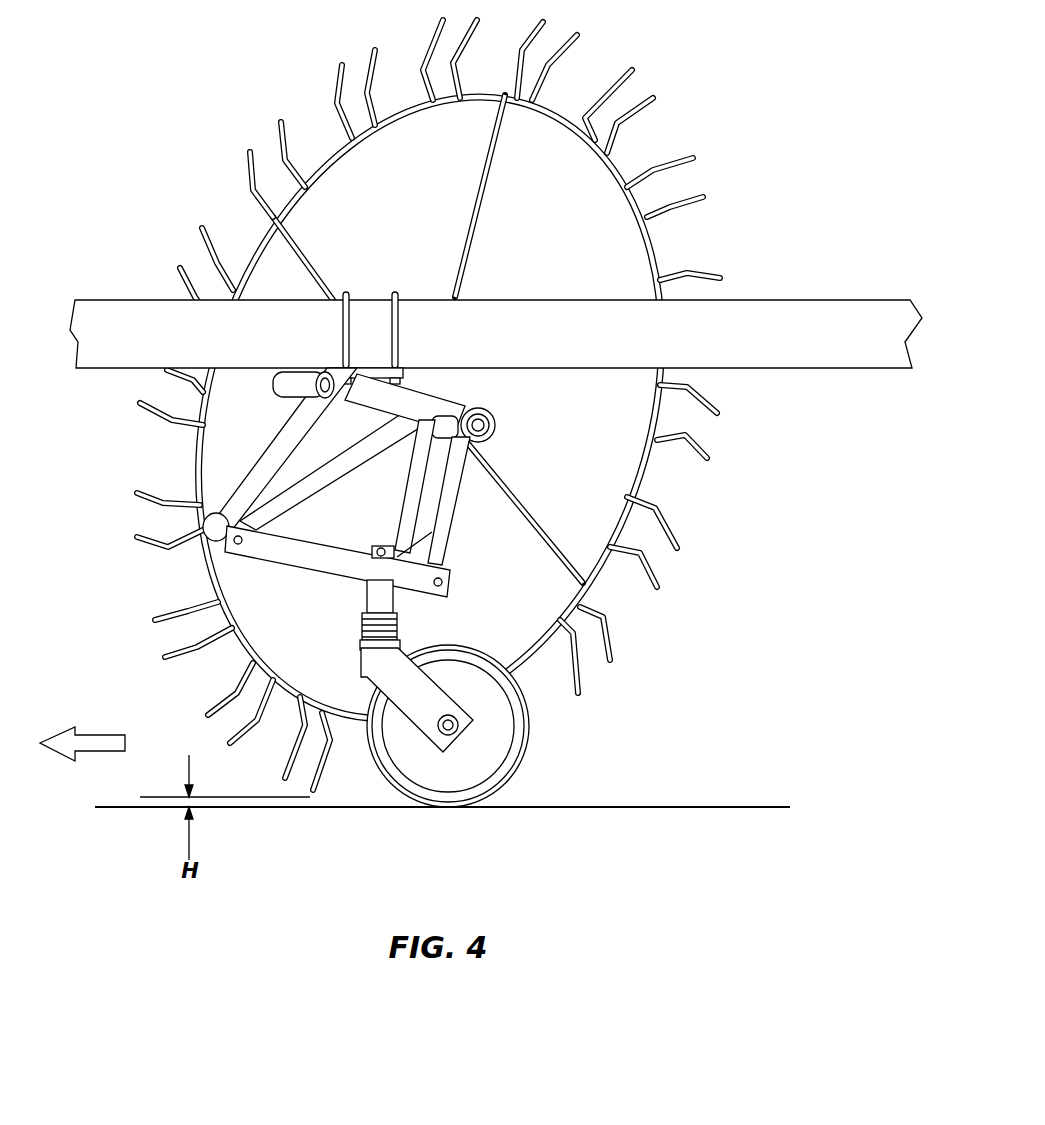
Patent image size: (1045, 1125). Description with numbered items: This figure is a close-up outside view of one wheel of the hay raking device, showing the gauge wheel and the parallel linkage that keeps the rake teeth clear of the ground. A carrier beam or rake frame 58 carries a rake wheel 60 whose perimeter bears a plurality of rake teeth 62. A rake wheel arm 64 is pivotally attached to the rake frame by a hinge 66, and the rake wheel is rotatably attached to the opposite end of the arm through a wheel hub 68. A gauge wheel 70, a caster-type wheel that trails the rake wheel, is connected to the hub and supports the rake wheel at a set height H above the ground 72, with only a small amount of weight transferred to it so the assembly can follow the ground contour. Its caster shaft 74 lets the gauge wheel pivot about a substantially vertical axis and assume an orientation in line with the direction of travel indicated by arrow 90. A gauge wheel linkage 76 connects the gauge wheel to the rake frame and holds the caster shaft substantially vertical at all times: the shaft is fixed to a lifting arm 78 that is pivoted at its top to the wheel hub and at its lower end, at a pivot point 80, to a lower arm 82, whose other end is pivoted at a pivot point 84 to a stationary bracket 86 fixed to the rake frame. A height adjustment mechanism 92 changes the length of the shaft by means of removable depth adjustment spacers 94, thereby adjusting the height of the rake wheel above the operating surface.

The carrier beam 58 is at (803, 325).
The rake wheel 60 is at (553, 205).
The rake teeth 62 is at (280, 133).
The rake wheel arm 64 is at (398, 435).
The hinge 66 is at (310, 378).
The wheel hub 68 is at (497, 424).
The gauge wheel 70 is at (493, 747).
The ground 72 is at (703, 807).
The caster shaft 74 is at (377, 600).
The gauge wheel linkage 76 is at (484, 501).
The lifting arm 78 is at (450, 520).
The pivot point 80 is at (452, 580).
The lower arm 82 is at (320, 557).
The pivot point 84 is at (205, 538).
The stationary bracket 86 is at (270, 473).
The arrow 90 is at (101, 740).
The height adjustment mechanism 92 is at (413, 618).
The depth adjustment spacers 94 is at (367, 627).